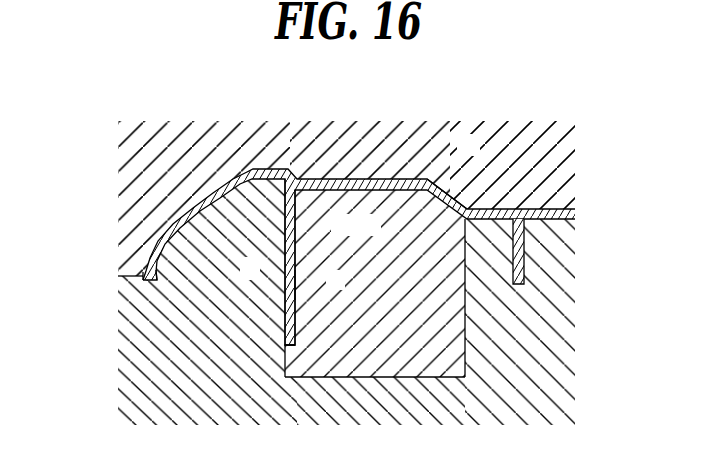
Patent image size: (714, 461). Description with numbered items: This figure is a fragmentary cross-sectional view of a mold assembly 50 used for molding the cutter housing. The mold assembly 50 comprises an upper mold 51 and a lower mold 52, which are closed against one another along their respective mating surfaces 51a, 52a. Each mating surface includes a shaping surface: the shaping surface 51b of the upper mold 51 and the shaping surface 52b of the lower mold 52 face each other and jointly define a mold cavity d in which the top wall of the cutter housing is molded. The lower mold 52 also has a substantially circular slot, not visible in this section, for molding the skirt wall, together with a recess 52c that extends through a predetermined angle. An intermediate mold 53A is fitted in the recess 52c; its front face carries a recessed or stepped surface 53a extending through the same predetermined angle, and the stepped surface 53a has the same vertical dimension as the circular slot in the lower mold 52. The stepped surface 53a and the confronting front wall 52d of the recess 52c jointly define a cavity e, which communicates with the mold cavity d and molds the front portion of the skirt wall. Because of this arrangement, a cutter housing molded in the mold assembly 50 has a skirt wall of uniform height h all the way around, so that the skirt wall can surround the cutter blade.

The mold assembly 50 is at (516, 140).
The upper mold 51 is at (147, 188).
The mating surface 51a is at (142, 280).
The shaping surface 51b is at (338, 178).
The lower mold 52 is at (170, 367).
The mating surface 52a is at (143, 275).
The shaping surface 52b is at (550, 214).
The recess 52c is at (376, 377).
The front wall 52d is at (295, 286).
The stepped surface 53a is at (294, 232).
The intermediate mold 53A is at (434, 362).
The mold cavity d is at (425, 180).
The cavity e is at (297, 285).
The uniform height h is at (252, 193).